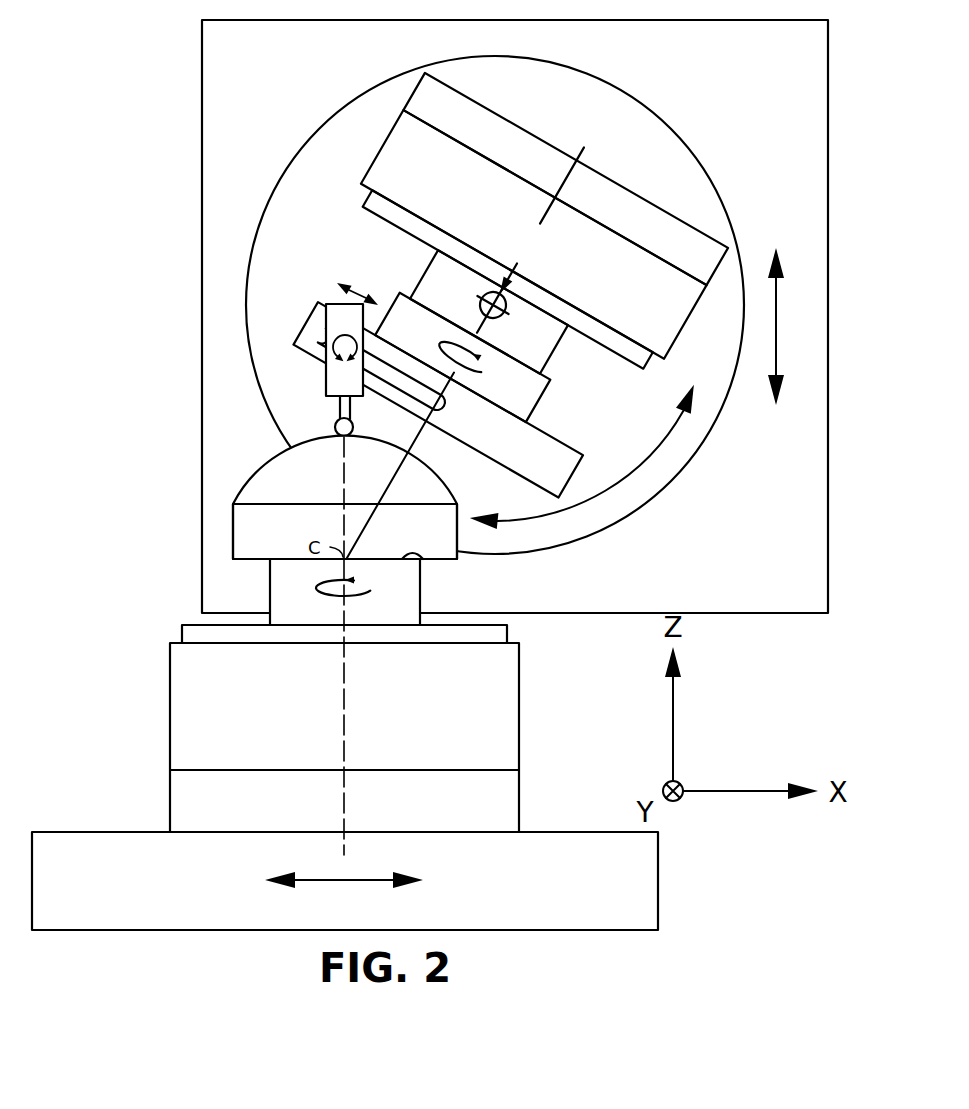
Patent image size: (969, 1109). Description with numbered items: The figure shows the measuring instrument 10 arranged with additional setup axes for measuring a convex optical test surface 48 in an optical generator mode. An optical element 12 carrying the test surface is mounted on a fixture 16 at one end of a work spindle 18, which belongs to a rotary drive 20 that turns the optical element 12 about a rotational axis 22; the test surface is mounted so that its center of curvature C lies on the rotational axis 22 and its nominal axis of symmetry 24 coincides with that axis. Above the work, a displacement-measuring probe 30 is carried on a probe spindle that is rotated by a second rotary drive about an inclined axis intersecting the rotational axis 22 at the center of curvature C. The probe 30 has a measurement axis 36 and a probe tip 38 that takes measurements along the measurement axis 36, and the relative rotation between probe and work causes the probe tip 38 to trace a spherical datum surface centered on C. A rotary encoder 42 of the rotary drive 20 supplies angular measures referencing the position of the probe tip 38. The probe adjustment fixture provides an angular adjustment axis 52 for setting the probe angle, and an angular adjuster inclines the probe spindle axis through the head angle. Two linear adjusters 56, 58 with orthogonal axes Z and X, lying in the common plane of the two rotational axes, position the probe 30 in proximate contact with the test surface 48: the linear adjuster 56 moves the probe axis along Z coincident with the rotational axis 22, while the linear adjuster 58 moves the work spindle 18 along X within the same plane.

The instrument 10 is at (146, 137).
The optical element 12 is at (250, 527).
The fixture 16 is at (420, 558).
The work spindle 18 is at (288, 590).
The rotary drive 20 is at (441, 730).
The rotational axis 22 is at (343, 688).
The nominal axis of symmetry 24 is at (344, 497).
The displacement-measuring probe 30 is at (335, 380).
The measurement axis 36 is at (339, 407).
The probe tip 38 is at (349, 436).
The rotary encoder 42 is at (190, 796).
The convex optical test surface 48 is at (268, 463).
The angular adjustment axis 52 is at (343, 333).
The linear adjuster 56 is at (777, 292).
The linear adjuster 58 is at (370, 880).